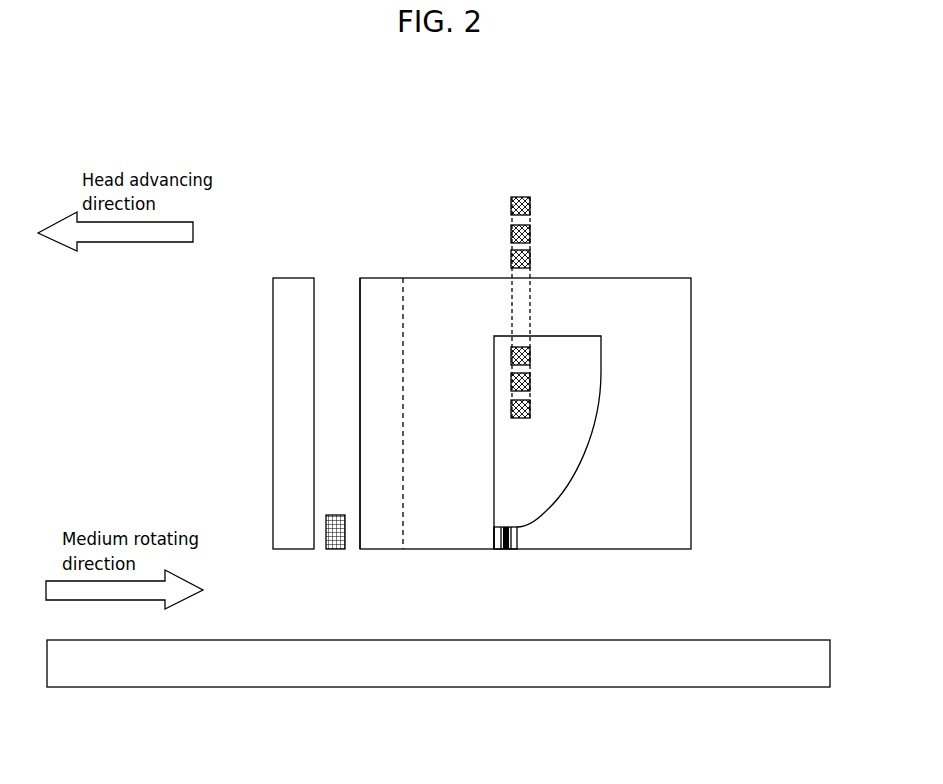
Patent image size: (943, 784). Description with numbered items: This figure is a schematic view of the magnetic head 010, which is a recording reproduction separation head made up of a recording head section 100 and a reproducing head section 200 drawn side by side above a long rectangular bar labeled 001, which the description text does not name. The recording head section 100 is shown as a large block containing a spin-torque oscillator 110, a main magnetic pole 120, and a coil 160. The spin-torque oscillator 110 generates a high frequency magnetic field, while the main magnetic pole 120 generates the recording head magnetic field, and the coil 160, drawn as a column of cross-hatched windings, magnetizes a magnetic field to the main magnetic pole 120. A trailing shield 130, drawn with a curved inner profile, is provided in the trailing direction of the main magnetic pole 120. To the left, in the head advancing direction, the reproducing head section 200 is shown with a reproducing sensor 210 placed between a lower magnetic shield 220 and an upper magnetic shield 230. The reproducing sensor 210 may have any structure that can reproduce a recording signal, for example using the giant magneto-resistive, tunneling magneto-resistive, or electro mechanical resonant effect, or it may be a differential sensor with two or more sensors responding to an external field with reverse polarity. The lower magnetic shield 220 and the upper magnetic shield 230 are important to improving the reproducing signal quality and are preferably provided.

The magnetic recording medium 001 is at (720, 640).
The magnetic head 010 is at (692, 193).
The recording head section 100 is at (525, 415).
The spin-torque oscillator 110 is at (502, 552).
The main magnetic pole 120 is at (481, 539).
The trailing shield 130 is at (532, 540).
The coil 160 is at (553, 233).
The reproducing head section 200 is at (321, 431).
The reproducing sensor 210 is at (333, 551).
The lower magnetic shield 220 is at (285, 280).
The upper magnetic shield 230 is at (375, 280).